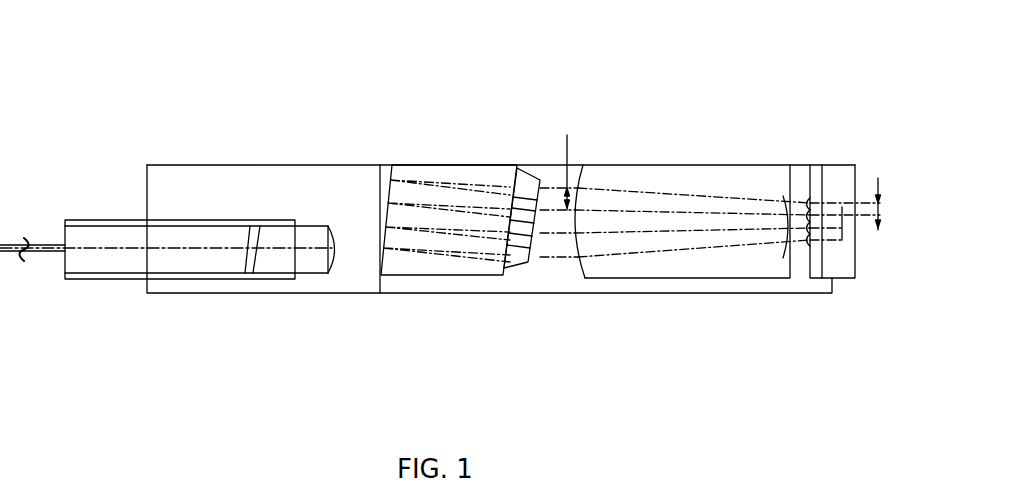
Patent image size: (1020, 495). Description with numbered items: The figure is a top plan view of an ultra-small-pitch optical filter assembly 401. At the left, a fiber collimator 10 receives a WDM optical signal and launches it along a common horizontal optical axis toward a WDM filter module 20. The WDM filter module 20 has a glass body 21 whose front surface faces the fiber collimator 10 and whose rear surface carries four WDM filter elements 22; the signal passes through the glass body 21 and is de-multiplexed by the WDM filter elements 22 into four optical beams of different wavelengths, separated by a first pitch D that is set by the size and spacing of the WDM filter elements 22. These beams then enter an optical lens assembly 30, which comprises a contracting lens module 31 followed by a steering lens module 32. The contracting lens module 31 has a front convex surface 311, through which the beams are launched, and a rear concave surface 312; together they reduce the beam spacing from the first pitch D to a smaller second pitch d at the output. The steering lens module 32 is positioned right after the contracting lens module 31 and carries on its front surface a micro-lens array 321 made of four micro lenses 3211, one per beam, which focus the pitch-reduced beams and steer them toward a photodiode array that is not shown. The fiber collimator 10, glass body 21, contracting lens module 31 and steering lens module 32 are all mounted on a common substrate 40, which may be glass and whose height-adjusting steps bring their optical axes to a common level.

The ultra-small-pitch optical filter assembly 401 is at (133, 113).
The fiber collimator 10 is at (127, 281).
The WDM filter module 20 is at (435, 159).
The glass body 21 is at (500, 185).
The WDM filter elements 22 is at (538, 190).
The optical lens assembly 30 is at (824, 99).
The contracting lens module 31 is at (643, 183).
The front convex surface 311 is at (578, 190).
The rear concave surface 312 is at (785, 205).
The steering lens module 32 is at (832, 258).
The micro-lens array 321 is at (805, 191).
The micro lenses 3211 is at (808, 205).
The substrate 40 is at (497, 293).